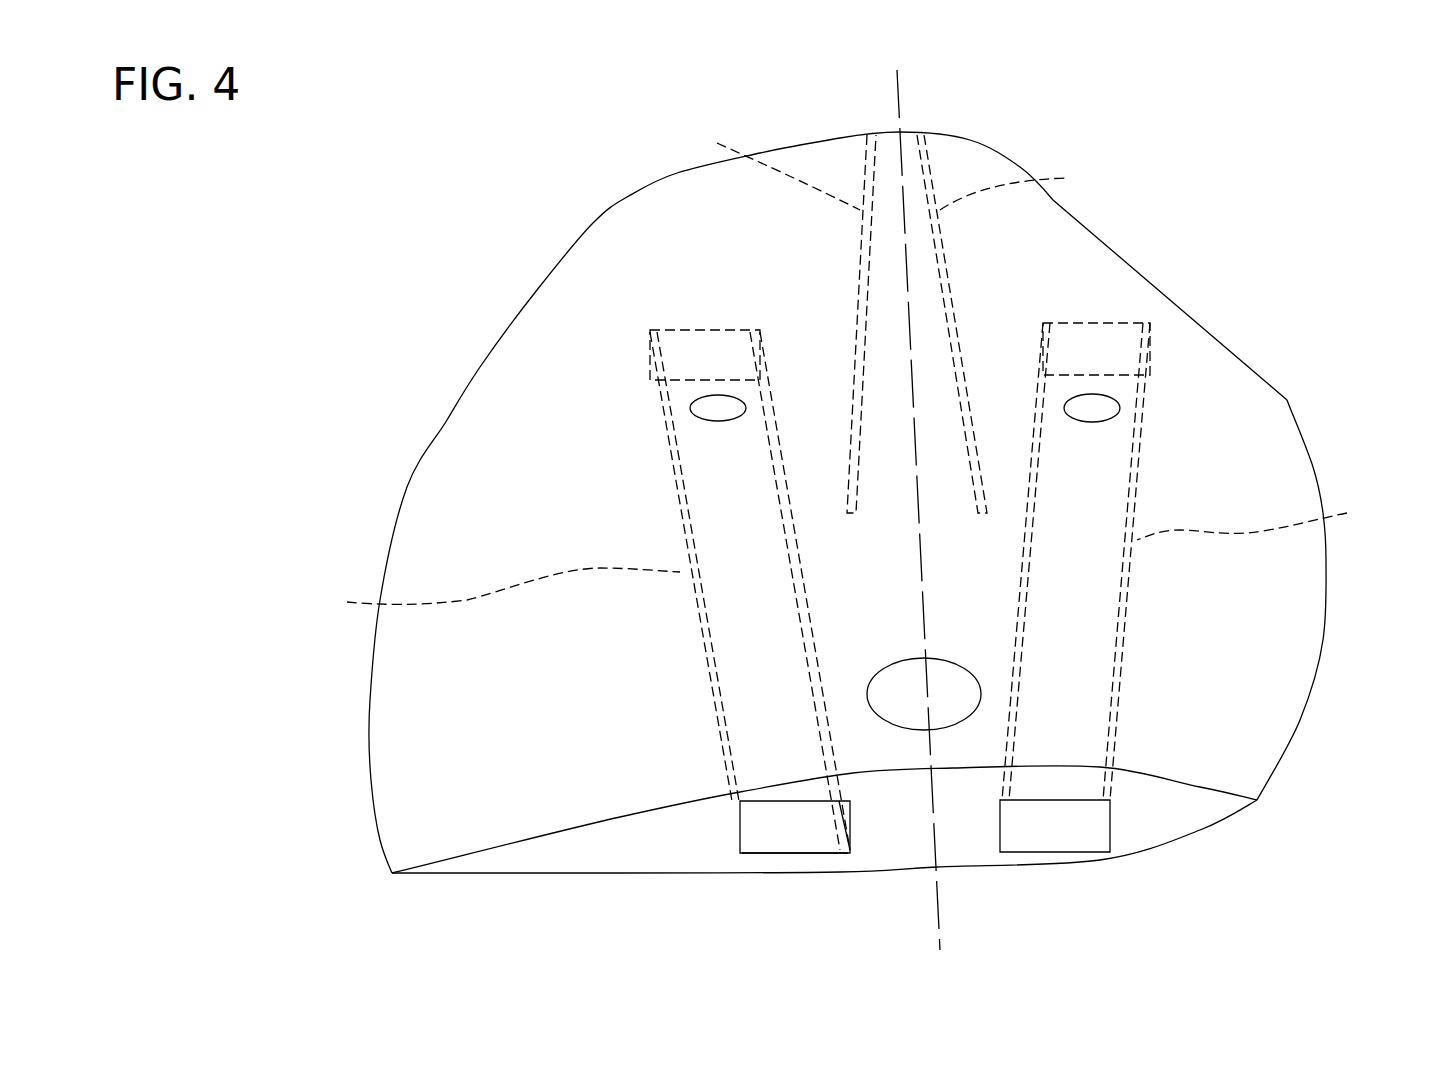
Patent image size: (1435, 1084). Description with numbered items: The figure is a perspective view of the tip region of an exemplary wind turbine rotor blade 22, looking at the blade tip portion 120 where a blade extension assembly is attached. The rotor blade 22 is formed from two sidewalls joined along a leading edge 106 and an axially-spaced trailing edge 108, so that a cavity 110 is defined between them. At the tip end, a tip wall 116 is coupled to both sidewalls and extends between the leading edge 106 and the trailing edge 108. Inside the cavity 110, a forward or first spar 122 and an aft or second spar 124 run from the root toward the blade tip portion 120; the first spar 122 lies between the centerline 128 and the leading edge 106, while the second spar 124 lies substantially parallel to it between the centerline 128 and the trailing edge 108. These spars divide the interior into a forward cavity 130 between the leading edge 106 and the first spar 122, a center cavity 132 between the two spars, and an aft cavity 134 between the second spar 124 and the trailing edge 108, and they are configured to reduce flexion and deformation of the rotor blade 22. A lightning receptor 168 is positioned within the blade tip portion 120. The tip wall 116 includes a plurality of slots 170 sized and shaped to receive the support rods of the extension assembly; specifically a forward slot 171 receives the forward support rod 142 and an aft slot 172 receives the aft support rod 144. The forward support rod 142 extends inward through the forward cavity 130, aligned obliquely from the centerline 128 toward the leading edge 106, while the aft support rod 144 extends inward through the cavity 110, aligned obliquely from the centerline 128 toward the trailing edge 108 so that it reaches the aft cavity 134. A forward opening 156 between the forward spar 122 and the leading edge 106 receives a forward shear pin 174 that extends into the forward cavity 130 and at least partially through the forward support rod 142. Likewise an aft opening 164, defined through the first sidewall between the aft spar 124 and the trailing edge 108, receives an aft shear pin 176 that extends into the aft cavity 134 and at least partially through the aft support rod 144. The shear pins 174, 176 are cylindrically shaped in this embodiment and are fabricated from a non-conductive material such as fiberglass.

The rotor blade 22 is at (1237, 180).
The leading edge 106 is at (1322, 668).
The trailing edge 108 is at (408, 487).
The cavity 110 is at (622, 698).
The tip wall 116 is at (547, 857).
The blade tip portion 120 is at (1345, 465).
The first spar 122 is at (1029, 187).
The second spar 124 is at (762, 169).
The centerline 128 is at (900, 93).
The forward cavity 130 is at (1033, 280).
The center cavity 132 is at (910, 375).
The aft cavity 134 is at (803, 282).
The forward support rod 142 is at (1266, 520).
The aft support rod 144 is at (489, 593).
The forward opening 156 is at (1120, 402).
The aft opening 164 is at (690, 405).
The lightning receptor 168 is at (946, 659).
The slots 170 is at (773, 843).
The forward slot 171 is at (1043, 825).
The aft slot 172 is at (812, 853).
The forward shear pin 174 is at (1096, 402).
The aft shear pin 176 is at (716, 406).